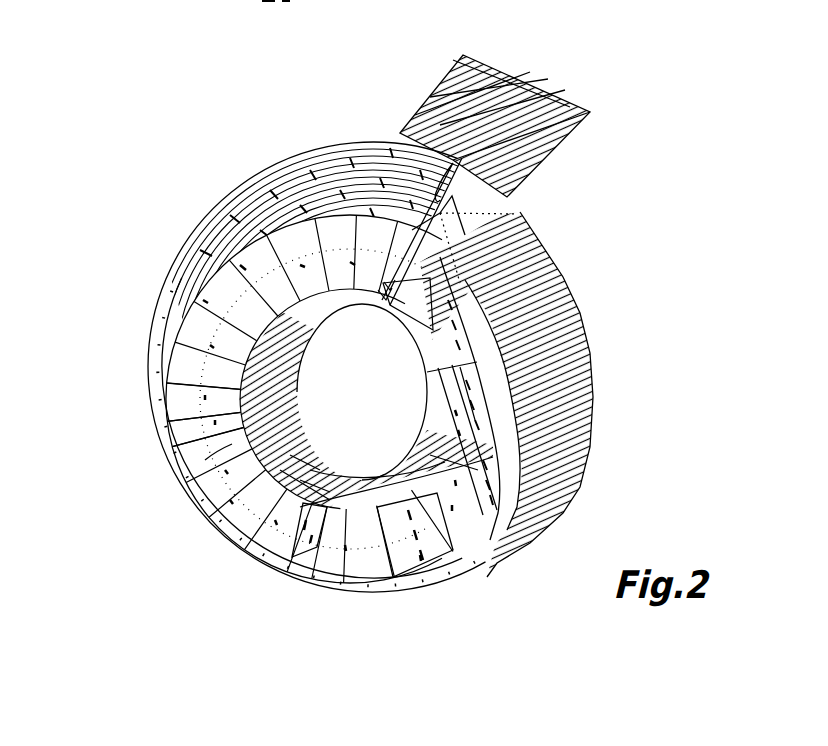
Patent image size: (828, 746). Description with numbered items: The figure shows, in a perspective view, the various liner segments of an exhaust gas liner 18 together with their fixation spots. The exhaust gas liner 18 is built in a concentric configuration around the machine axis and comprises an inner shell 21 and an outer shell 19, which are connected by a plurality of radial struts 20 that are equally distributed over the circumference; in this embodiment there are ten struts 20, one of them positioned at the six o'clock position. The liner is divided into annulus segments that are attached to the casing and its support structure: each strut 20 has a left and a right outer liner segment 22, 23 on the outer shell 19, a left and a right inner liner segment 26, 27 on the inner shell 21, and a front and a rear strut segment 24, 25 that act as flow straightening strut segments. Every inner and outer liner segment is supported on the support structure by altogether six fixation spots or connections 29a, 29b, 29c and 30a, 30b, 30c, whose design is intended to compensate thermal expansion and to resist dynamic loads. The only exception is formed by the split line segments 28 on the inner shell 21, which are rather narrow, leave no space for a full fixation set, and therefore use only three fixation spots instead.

The exhaust gas liner 18 is at (175, 190).
The outer shell 19 is at (282, 578).
The radial strut 20 is at (208, 457).
The inner shell 21 is at (225, 400).
The left outer liner segment 22 is at (553, 108).
The right outer liner segment 23 is at (481, 72).
The front strut segment 24 is at (420, 232).
The rear strut segment 25 is at (448, 197).
The left inner liner segment 26 is at (423, 298).
The right inner liner segment 27 is at (347, 290).
The split line segment 28 is at (452, 365).
The fixation spot 29a is at (452, 145).
The fixation spot 29b is at (458, 102).
The fixation spot 29c is at (448, 170).
The fixation spot 30a is at (343, 452).
The fixation spot 30b is at (347, 400).
The fixation spot 30c is at (347, 400).